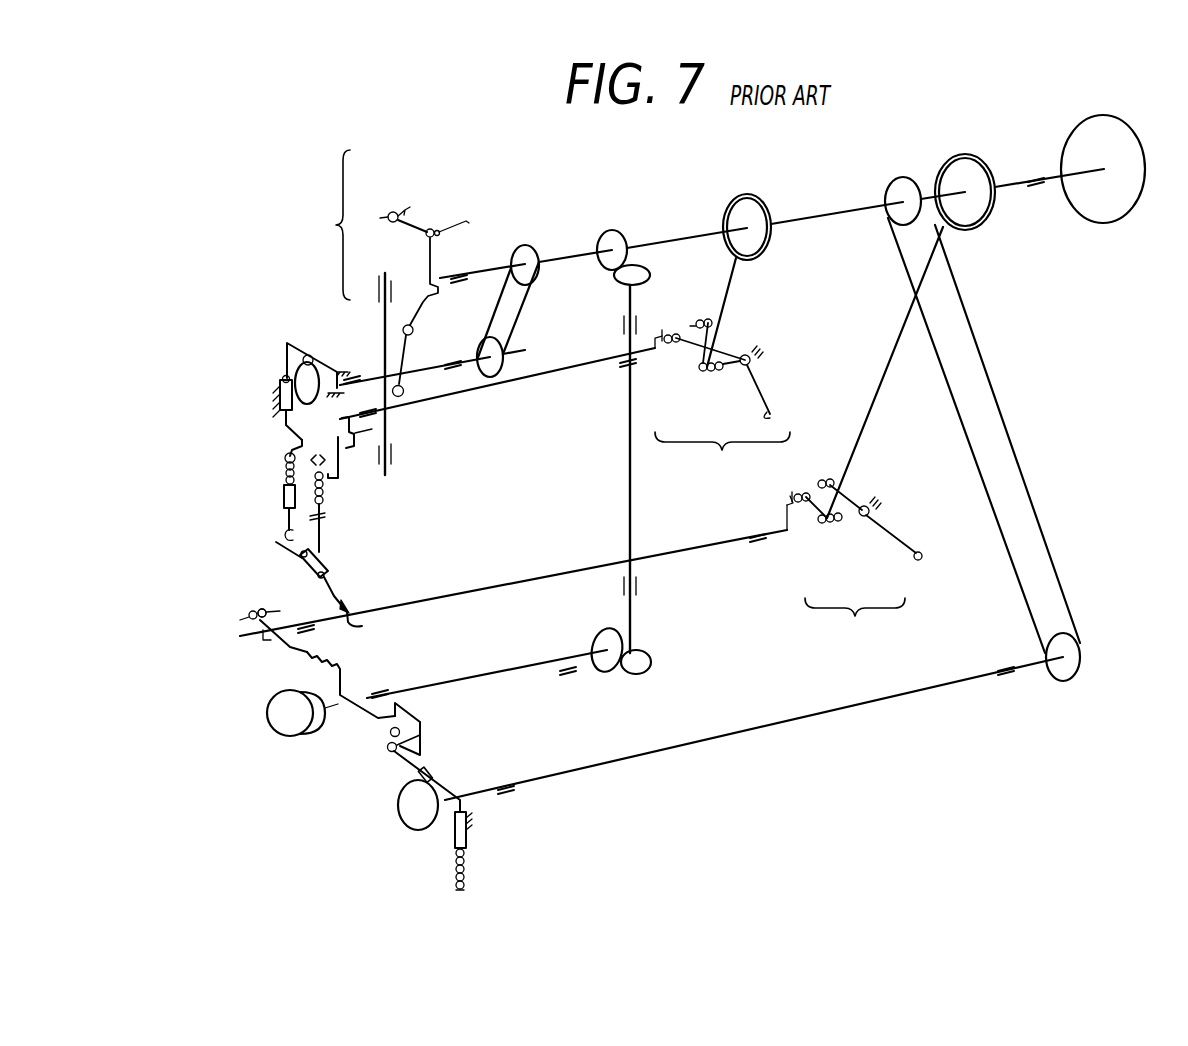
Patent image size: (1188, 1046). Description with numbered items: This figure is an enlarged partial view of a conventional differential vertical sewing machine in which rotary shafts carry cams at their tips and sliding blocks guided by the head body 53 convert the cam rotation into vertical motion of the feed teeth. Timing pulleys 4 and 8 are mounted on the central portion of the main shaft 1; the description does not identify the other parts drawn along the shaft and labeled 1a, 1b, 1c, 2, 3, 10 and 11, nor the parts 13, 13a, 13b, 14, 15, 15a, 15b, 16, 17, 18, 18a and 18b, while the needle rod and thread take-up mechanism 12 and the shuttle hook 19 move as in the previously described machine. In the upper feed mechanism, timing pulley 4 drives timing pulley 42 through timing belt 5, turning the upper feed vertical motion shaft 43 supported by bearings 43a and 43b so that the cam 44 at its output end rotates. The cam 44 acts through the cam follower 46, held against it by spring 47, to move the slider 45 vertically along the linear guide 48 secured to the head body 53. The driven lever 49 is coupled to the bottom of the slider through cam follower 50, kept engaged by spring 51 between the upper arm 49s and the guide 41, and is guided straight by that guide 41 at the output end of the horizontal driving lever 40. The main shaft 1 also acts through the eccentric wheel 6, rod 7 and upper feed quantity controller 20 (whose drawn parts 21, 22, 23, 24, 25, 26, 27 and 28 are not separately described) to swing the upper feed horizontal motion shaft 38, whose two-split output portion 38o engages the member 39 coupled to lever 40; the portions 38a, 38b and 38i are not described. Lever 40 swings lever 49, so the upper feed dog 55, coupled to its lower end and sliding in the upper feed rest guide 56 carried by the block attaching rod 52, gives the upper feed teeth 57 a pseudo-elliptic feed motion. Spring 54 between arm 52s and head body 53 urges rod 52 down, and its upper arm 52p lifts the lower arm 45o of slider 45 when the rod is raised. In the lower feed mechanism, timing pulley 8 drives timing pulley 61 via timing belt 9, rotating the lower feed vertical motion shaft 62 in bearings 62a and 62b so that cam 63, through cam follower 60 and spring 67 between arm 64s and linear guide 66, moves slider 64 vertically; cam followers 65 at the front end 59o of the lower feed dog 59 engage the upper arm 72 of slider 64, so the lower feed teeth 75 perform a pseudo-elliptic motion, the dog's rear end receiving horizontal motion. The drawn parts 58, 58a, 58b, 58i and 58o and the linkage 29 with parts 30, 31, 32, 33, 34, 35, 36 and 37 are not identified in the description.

The main shaft 1 is at (836, 206).
The shaft portion 1a is at (462, 270).
The shaft portion 1b is at (1035, 175).
The handwheel 1c is at (1115, 135).
The pulley 2 is at (612, 230).
The bevel gear 3 is at (637, 265).
The timing pulley 4 is at (527, 245).
The timing belt 5 is at (538, 295).
The eccentric wheel 6 is at (732, 205).
The rod 7 is at (740, 276).
The timing pulley 8 is at (905, 182).
The timing belt 9 is at (1000, 370).
The pulley 10 is at (950, 160).
The connecting rod 11 is at (902, 334).
The needle rod and thread take-up mechanism 12 is at (329, 225).
The lever 13 is at (383, 318).
The lever pivot 13a is at (396, 284).
The lever pivot 13b is at (396, 460).
The link 14 is at (467, 219).
The vertical shaft 15 is at (625, 491).
The bearing 15a is at (622, 325).
The bearing 15b is at (640, 588).
The bevel gear 16 is at (652, 652).
The bevel gear 17 is at (598, 630).
The lower shaft 18 is at (535, 688).
The bearing 18a is at (385, 690).
The bearing 18b is at (572, 676).
The shuttle hook 19 is at (268, 720).
The upper feed quantity controller 20 is at (722, 456).
The pivot 21 is at (755, 362).
The link 22 is at (700, 320).
The pivot 23 is at (715, 372).
The link 24 is at (662, 338).
The lever 25 is at (740, 345).
The arm 26 is at (785, 420).
The pin 27 is at (697, 360).
The pin 28 is at (698, 372).
The linkage 29 is at (855, 627).
The pivot 30 is at (870, 498).
The link 31 is at (828, 478).
The pin 32 is at (845, 522).
The link 33 is at (794, 496).
The arm 34 is at (895, 530).
The pin 35 is at (924, 554).
The pin 36 is at (815, 525).
The pin 37 is at (830, 524).
The upper feed horizontal motion shaft 38 is at (550, 387).
The bearing 38a is at (392, 411).
The bearing 38b is at (633, 378).
The shaft end 38i is at (648, 348).
The two-split output portion 38o is at (385, 440).
The member 39 is at (345, 452).
The horizontal driving lever 40 is at (343, 474).
The guide 41 is at (281, 536).
The timing pulley 42 is at (510, 360).
The upper feed vertical motion shaft 43 is at (432, 358).
The bearing 43a is at (405, 388).
The bearing 43b is at (462, 367).
The cam 44 is at (284, 358).
The slider 45 is at (312, 360).
The lower arm 45o is at (294, 440).
The cam follower 46 is at (305, 355).
The spring 47 is at (341, 368).
The linear guide 48 is at (276, 392).
The driven lever 49 is at (278, 548).
The upper arm 49s is at (284, 466).
The cam follower 50 is at (286, 430).
The spring 51 is at (284, 498).
The block attaching rod 52 is at (326, 573).
The upper arm 52p is at (283, 456).
The arm 52s is at (325, 540).
The head body 53 is at (349, 428).
The spring 54 is at (325, 505).
The upper feed dog 55 is at (284, 560).
The upper feed rest guide 56 is at (283, 612).
The upper feed teeth 57 is at (362, 626).
The shaft 58 is at (540, 580).
The bearing 58a is at (306, 652).
The bearing 58b is at (742, 532).
The shaft end 58i is at (780, 510).
The shaft end 58o is at (250, 627).
The lower feed dog 59 is at (268, 644).
The front end 59o is at (418, 705).
The cam follower 60 is at (416, 779).
The timing pulley 61 is at (1064, 682).
The lower feed vertical motion shaft 62 is at (792, 740).
The bearing 62a is at (516, 790).
The bearing 62b is at (1004, 680).
The cam 63 is at (395, 808).
The slider 64 is at (450, 780).
The arm 64s is at (452, 890).
The cam followers 65 is at (386, 745).
The linear guide 66 is at (480, 834).
The spring 67 is at (480, 866).
The upper arm 72 is at (422, 745).
The lower feed teeth 75 is at (342, 662).